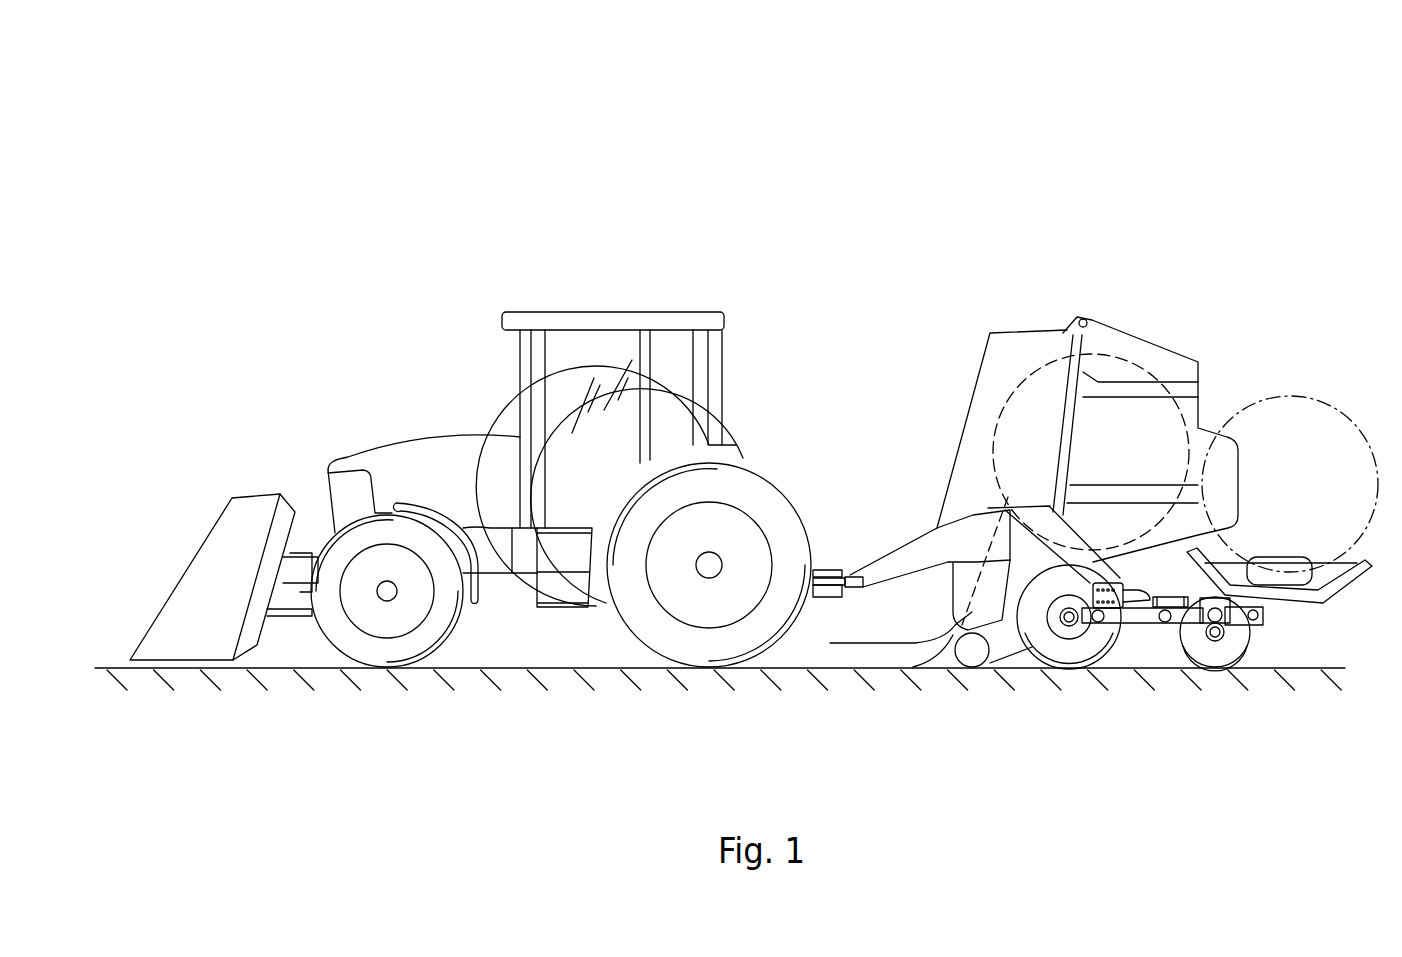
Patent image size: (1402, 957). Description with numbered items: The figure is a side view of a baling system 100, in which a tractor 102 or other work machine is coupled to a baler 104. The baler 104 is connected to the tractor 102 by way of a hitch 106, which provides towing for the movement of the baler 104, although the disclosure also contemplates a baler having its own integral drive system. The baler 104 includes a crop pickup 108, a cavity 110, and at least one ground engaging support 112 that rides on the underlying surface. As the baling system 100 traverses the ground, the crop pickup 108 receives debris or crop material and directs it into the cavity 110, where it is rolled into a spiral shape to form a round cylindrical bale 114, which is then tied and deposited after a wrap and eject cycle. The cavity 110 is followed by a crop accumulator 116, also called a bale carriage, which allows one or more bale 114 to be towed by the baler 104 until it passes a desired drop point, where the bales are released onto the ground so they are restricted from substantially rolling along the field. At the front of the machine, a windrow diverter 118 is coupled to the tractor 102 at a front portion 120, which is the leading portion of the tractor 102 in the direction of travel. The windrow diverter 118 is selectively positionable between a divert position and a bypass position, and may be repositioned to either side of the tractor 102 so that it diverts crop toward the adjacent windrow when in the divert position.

The baling system 100 is at (485, 180).
The tractor 102 is at (389, 422).
The baler 104 is at (1020, 305).
The hitch 106 is at (832, 572).
The crop pickup 108 is at (946, 676).
The cavity 110 is at (1125, 410).
The ground engaging support 112 is at (1215, 663).
The bale 114 is at (1303, 397).
The crop accumulator 116 is at (1301, 618).
The windrow diverter 118 is at (213, 550).
The front portion 120 is at (308, 494).